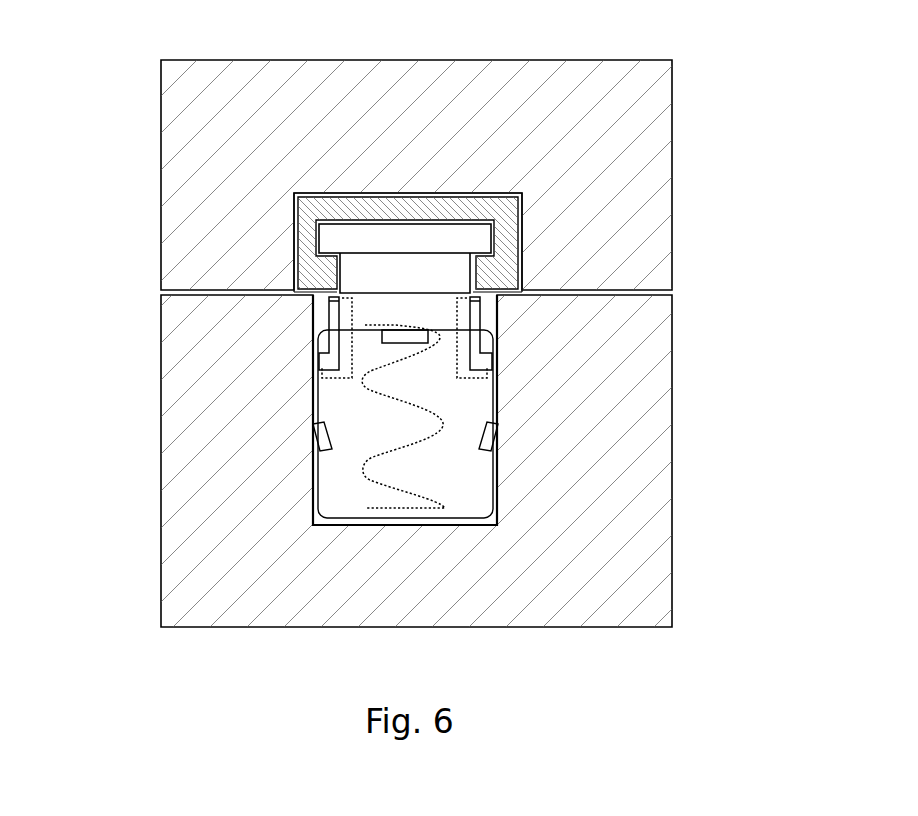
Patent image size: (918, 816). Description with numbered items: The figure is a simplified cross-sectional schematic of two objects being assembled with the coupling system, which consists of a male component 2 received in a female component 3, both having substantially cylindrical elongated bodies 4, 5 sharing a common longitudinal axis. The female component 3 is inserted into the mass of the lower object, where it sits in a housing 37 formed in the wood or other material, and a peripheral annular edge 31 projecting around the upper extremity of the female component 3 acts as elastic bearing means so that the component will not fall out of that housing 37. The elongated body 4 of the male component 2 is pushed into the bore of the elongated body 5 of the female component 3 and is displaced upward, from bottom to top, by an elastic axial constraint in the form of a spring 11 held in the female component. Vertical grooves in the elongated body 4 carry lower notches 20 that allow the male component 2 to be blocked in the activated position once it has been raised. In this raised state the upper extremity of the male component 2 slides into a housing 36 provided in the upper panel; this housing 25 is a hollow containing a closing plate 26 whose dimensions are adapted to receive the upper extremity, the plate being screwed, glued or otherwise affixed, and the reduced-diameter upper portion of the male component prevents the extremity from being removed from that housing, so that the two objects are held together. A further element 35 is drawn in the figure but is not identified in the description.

The male component 2 is at (480, 240).
The female component 3 is at (470, 518).
The elongated body of the male component 4 is at (440, 278).
The elongated body of the female component 5 is at (367, 428).
The spring 11 is at (397, 487).
The lower notches 20 is at (333, 375).
The housing 25 is at (297, 213).
The closing plate 26 is at (437, 200).
The peripheral annular edge 31 is at (327, 330).
The electrode plate 35 is at (387, 323).
The housing 36 is at (175, 108).
The housing 37 is at (173, 348).